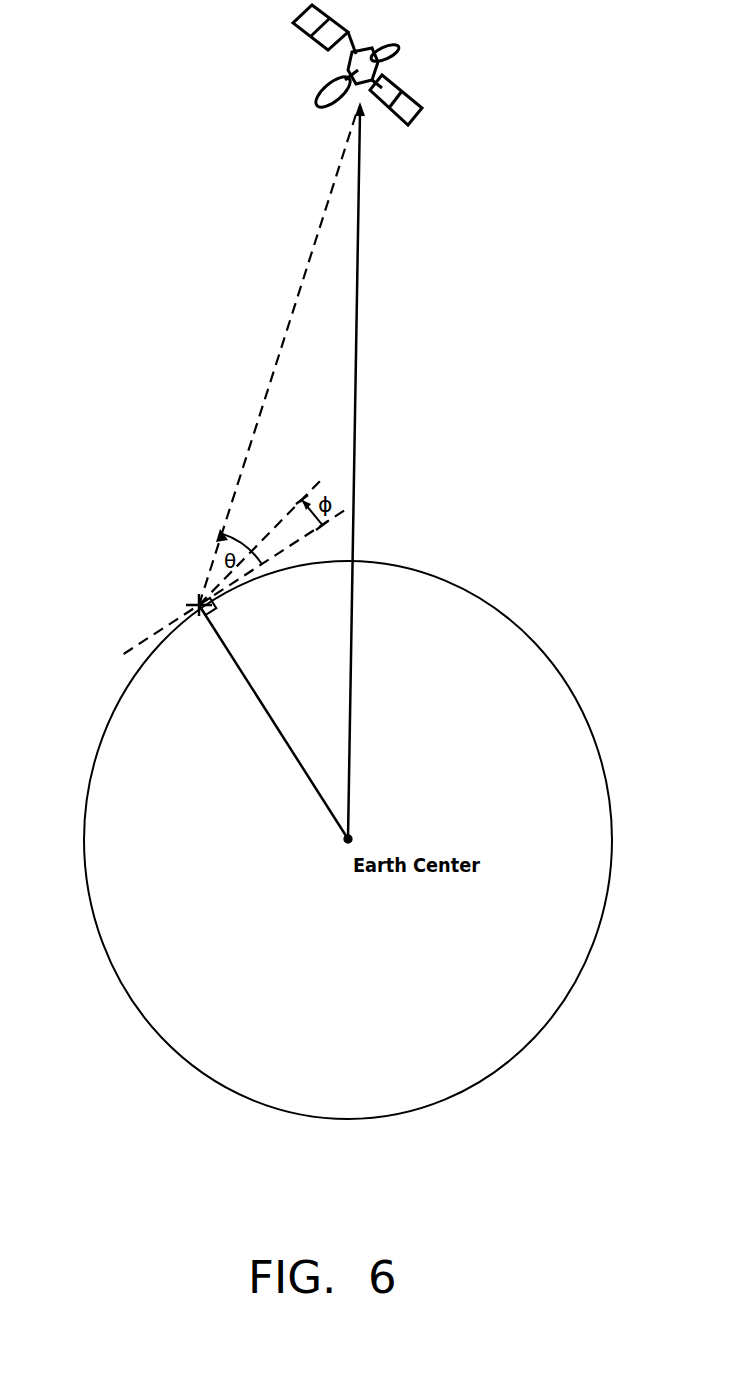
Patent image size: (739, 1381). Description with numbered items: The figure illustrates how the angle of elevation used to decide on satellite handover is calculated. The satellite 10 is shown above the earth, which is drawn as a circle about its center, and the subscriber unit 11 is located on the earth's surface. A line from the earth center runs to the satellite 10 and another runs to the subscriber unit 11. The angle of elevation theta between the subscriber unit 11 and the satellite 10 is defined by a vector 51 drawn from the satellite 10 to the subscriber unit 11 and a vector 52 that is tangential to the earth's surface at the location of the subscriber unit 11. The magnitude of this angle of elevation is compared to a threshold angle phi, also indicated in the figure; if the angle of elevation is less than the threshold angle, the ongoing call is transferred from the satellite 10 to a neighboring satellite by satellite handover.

The satellite 10 is at (367, 110).
The subscriber unit 11 is at (196, 612).
The vector 51 is at (292, 315).
The vector 52 is at (143, 642).